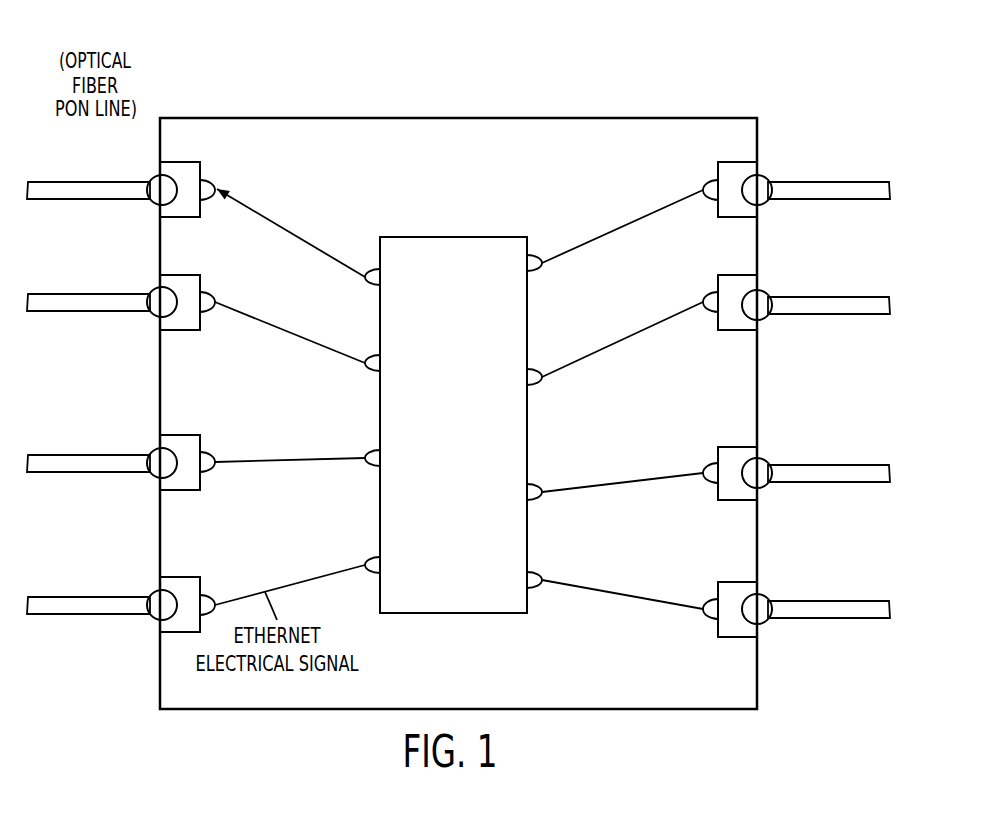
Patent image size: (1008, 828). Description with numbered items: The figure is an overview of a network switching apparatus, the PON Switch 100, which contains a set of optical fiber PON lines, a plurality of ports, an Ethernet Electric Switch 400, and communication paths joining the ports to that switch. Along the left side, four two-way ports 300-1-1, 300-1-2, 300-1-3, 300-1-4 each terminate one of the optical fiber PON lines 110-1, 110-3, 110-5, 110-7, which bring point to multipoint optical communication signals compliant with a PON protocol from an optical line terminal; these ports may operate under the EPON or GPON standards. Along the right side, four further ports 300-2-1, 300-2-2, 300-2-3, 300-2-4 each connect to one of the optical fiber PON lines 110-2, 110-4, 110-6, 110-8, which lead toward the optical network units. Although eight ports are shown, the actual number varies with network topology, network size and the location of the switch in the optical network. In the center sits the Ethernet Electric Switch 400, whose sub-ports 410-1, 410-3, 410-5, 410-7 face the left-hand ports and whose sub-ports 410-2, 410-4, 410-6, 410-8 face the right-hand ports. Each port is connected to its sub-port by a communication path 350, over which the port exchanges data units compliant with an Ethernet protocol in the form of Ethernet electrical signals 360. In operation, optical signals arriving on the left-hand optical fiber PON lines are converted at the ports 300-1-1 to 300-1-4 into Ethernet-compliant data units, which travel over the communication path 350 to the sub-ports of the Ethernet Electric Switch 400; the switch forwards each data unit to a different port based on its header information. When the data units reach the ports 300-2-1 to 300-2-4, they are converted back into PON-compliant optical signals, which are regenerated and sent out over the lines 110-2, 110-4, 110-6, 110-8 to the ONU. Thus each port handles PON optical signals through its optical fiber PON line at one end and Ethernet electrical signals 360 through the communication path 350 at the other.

The PON Switch 100 is at (457, 117).
The optical fiber PON line 110-1 is at (107, 181).
The optical fiber PON line 110-2 is at (810, 181).
The optical fiber PON line 110-3 is at (107, 293).
The optical fiber PON line 110-4 is at (810, 296).
The optical fiber PON line 110-5 is at (107, 454).
The optical fiber PON line 110-6 is at (810, 464).
The optical fiber PON line 110-7 is at (107, 596).
The optical fiber PON line 110-8 is at (810, 600).
The port 300-1-1 is at (201, 172).
The port 300-1-2 is at (201, 285).
The port 300-1-3 is at (201, 445).
The port 300-1-4 is at (201, 587).
The port 300-2-1 is at (717, 172).
The port 300-2-2 is at (717, 285).
The port 300-2-3 is at (717, 457).
The port 300-2-4 is at (717, 592).
The communication path 350 is at (288, 230).
The Ethernet electrical signal 360 is at (218, 197).
The Ethernet electric switch 400 is at (450, 614).
The sub-port 410-1 is at (366, 283).
The sub-port 410-2 is at (541, 268).
The sub-port 410-3 is at (366, 368).
The sub-port 410-4 is at (541, 382).
The sub-port 410-5 is at (366, 462).
The sub-port 410-6 is at (541, 497).
The sub-port 410-7 is at (366, 560).
The sub-port 410-8 is at (541, 576).